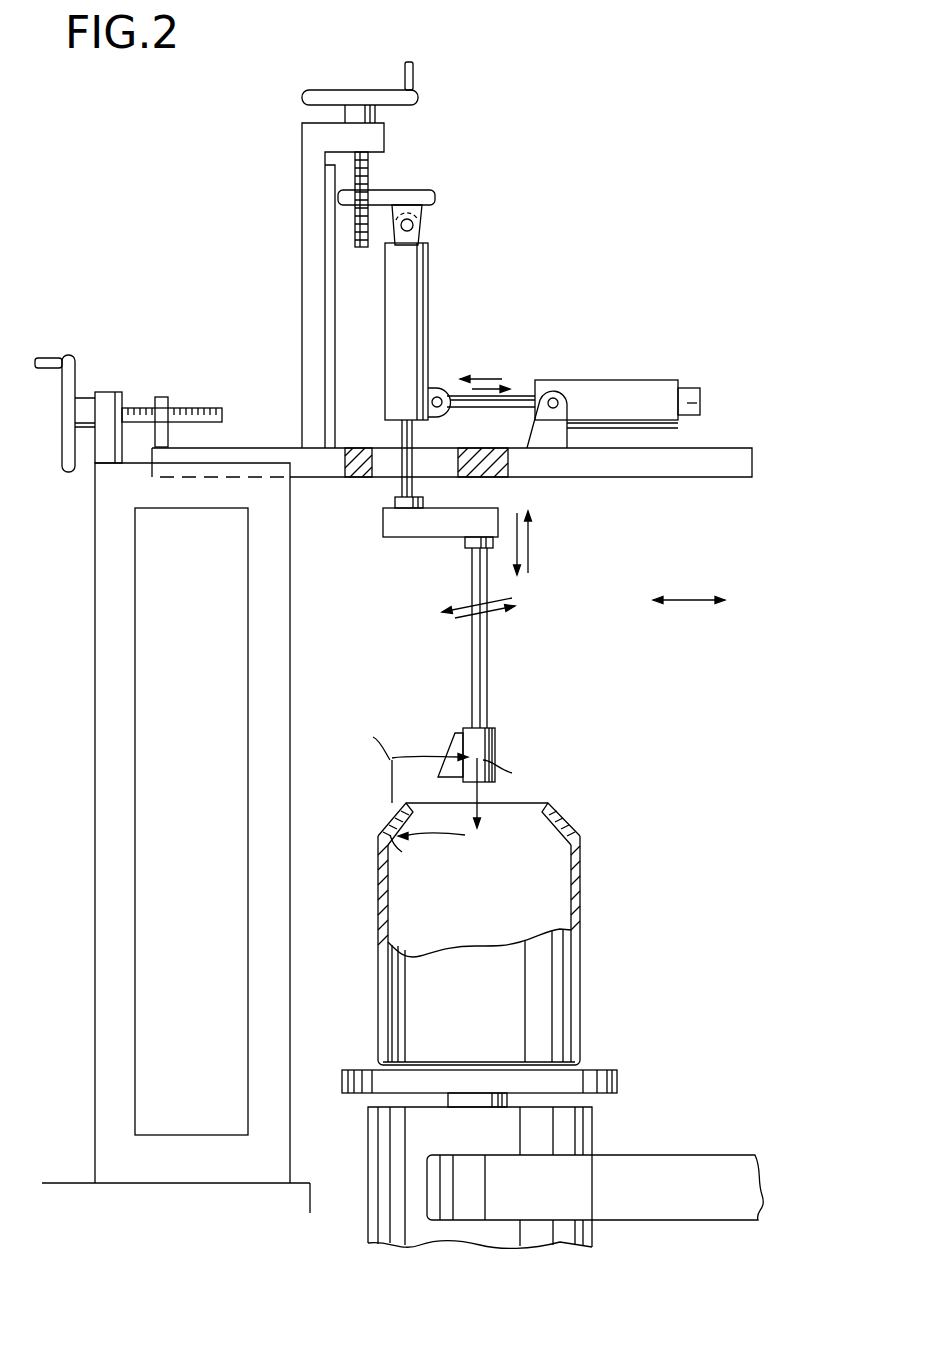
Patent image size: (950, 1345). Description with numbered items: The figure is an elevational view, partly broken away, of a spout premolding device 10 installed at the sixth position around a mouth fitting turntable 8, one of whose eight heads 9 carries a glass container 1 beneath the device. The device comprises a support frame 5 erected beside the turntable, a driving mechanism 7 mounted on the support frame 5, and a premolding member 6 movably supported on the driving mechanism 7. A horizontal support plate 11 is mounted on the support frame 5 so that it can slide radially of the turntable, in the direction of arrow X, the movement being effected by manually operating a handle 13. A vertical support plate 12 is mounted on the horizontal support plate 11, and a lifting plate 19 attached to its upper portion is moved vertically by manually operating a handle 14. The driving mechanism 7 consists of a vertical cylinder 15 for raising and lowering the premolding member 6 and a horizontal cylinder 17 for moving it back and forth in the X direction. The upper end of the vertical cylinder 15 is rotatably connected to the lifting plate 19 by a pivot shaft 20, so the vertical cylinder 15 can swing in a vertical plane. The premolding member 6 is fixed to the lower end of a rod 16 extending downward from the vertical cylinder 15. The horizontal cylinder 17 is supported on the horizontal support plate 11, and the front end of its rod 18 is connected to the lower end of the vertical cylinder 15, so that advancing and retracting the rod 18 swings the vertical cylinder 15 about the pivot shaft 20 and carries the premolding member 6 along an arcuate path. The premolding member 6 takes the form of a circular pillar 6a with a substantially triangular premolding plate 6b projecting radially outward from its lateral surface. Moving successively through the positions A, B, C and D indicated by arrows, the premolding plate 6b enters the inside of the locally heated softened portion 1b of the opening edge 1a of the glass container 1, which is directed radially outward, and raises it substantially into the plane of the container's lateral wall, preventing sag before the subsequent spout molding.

The glass container 1 is at (572, 958).
The opening edge 1a is at (572, 813).
The locally heated softened portion 1b is at (383, 827).
The support frame 5 is at (292, 642).
The premolding member 6 is at (503, 736).
The circular pillar 6a is at (497, 742).
The premolding plate 6b is at (455, 745).
The driving mechanism 7 is at (632, 264).
The mouth fitting turntable 8 is at (723, 1168).
The head 9 is at (580, 1128).
The spout premolding device 10 is at (157, 212).
The horizontal support plate 11 is at (663, 468).
The vertical support plate 12 is at (302, 272).
The handle 13 is at (73, 355).
The handle 14 is at (418, 95).
The vertical cylinder 15 is at (428, 287).
The rod 16 is at (402, 492).
The horizontal cylinder 17 is at (650, 387).
The rod 18 is at (527, 393).
The lifting plate 19 is at (432, 192).
The pivot shaft 20 is at (412, 226).